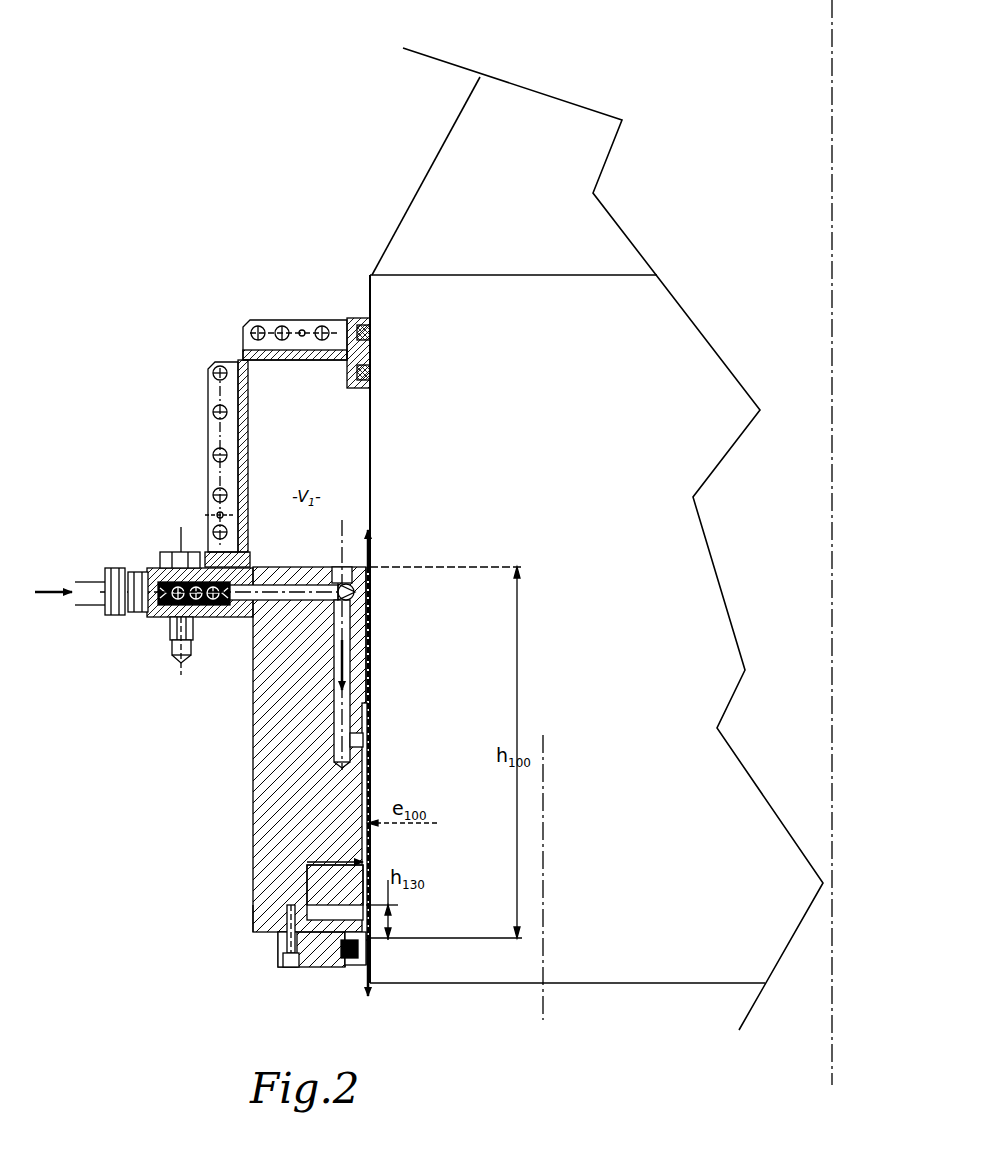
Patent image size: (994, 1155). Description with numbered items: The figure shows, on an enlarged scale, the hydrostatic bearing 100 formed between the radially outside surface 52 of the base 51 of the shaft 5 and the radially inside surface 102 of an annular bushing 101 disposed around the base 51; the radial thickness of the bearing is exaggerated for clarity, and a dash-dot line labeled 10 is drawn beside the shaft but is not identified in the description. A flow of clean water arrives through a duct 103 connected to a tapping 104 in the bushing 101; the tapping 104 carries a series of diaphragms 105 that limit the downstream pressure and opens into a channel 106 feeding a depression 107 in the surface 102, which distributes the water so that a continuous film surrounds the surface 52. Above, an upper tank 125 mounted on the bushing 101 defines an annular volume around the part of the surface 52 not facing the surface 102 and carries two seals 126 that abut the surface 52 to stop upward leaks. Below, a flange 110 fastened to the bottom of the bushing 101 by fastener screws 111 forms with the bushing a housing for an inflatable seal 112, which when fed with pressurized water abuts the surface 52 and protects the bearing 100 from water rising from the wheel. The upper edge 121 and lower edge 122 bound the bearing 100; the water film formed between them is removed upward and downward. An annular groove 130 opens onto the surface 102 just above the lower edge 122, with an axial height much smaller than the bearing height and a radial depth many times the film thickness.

The shaft 5 is at (587, 231).
The base of the shaft 51 is at (698, 780).
The radially outside surface of the base of the shaft 52 is at (360, 447).
The axis line 10 is at (543, 900).
The hydrostatic bearing 100 is at (372, 619).
The bushing 101 is at (263, 912).
The radially inside surface of the bushing 102 is at (372, 668).
The duct 103 is at (92, 578).
The tapping 104 is at (243, 618).
The diaphragms 105 is at (168, 628).
The channel 106 is at (340, 705).
The depression 107 is at (372, 727).
The flange 110 is at (313, 969).
The fastener screws 111 is at (280, 946).
The inflatable seal 112 is at (350, 966).
The upper edge of the bearing 121 is at (366, 566).
The lower edge of the bearing 122 is at (369, 934).
The upper tank 125 is at (244, 358).
The seals 126 is at (370, 332).
The annular groove 130 is at (323, 912).